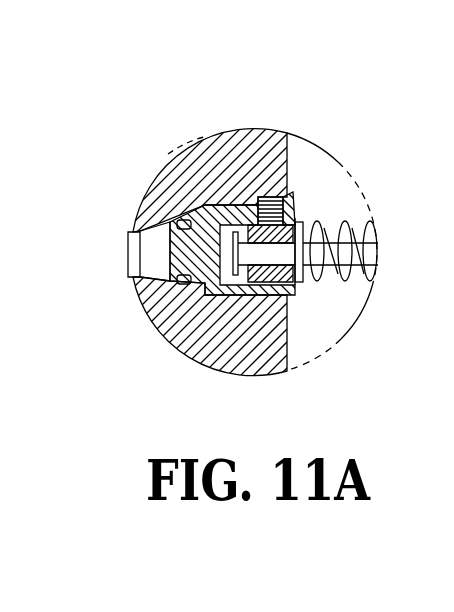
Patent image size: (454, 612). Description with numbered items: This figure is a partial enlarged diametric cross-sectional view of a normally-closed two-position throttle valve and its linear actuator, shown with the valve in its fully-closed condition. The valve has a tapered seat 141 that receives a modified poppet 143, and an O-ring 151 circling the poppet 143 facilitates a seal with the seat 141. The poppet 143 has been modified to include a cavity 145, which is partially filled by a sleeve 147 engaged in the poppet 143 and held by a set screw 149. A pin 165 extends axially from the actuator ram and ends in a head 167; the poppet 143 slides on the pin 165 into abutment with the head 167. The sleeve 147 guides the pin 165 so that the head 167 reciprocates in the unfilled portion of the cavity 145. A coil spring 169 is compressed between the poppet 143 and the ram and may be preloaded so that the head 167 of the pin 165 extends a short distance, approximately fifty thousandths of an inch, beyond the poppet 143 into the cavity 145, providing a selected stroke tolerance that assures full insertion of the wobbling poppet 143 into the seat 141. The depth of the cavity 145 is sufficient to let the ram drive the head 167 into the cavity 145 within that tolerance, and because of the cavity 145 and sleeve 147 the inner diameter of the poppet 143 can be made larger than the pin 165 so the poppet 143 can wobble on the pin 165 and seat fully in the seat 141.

The tapered seat 141 is at (222, 153).
The poppet 143 is at (248, 210).
The cavity 145 is at (230, 253).
The sleeve 147 is at (297, 280).
The set screw 149 is at (288, 196).
The O-ring 151 is at (185, 221).
The pin 165 is at (364, 220).
The head 167 is at (153, 325).
The coil spring 169 is at (318, 223).